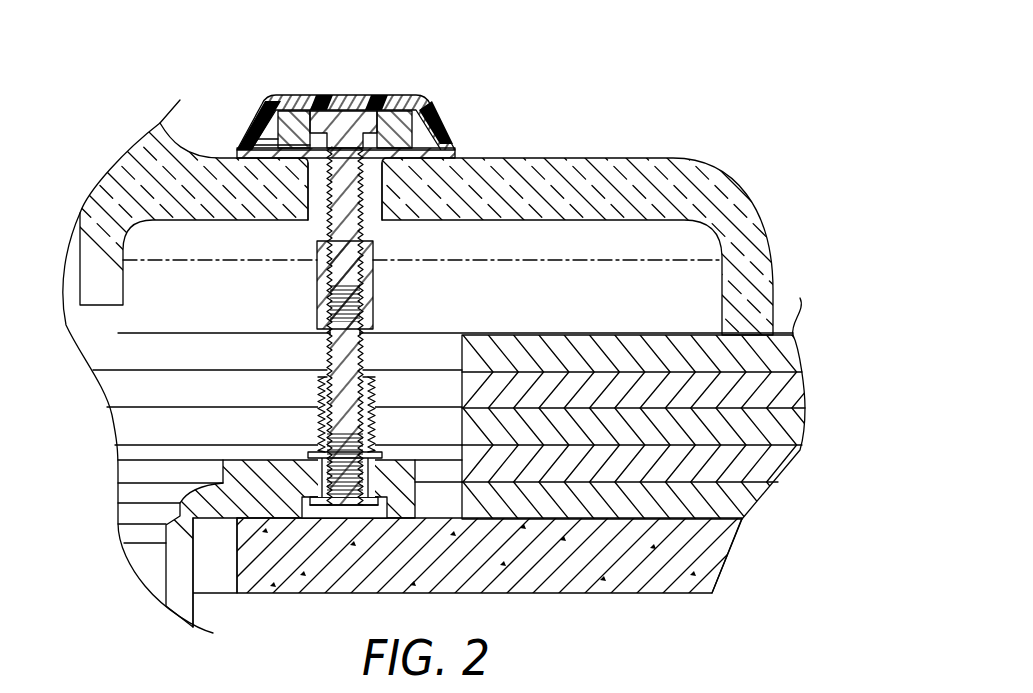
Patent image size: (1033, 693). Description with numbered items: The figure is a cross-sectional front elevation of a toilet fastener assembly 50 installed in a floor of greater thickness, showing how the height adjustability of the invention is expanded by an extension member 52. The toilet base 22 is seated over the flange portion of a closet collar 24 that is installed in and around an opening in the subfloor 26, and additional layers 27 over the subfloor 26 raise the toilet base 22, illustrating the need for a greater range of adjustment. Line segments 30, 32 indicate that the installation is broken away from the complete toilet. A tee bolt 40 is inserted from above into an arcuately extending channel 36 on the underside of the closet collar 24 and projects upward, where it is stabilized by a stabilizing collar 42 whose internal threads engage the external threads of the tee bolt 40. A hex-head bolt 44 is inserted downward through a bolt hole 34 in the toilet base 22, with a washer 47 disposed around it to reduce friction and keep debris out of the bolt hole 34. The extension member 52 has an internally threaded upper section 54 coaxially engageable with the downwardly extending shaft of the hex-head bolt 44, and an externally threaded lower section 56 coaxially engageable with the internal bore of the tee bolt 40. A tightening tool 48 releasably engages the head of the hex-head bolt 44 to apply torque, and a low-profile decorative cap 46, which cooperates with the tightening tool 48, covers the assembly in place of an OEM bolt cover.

The toilet base 22 is at (675, 159).
The closet collar 24 is at (238, 470).
The subfloor 26 is at (622, 594).
The additional layers 27 is at (790, 348).
The line segment 30 is at (140, 574).
The line segment 32 is at (803, 313).
The bolt hole 34 is at (313, 195).
The arcuately extending channel 36 is at (314, 506).
The tee bolt 40 is at (374, 522).
The stabilizing collar 42 is at (316, 425).
The hex-head bolt 44 is at (345, 110).
The decorative cap 46 is at (443, 128).
The washer 47 is at (458, 150).
The tightening tool 48 is at (276, 128).
The fastener assembly 50 is at (359, 83).
The extension member 52 is at (380, 289).
The internally threaded upper section 54 is at (318, 268).
The externally threaded lower section 56 is at (330, 357).